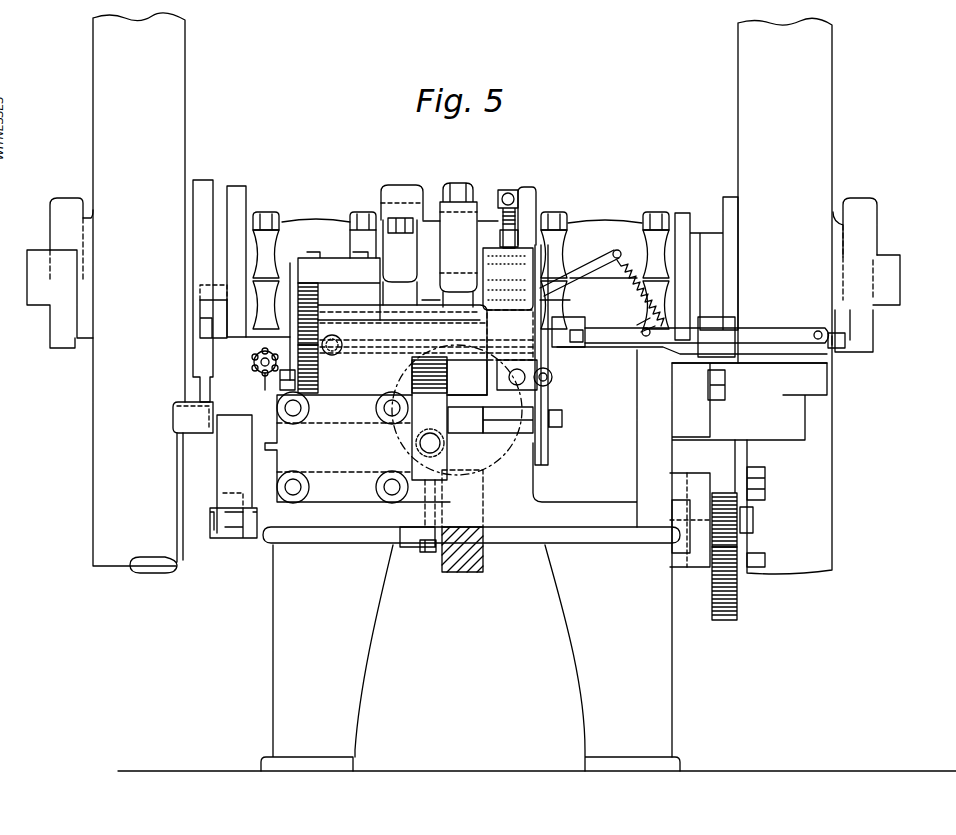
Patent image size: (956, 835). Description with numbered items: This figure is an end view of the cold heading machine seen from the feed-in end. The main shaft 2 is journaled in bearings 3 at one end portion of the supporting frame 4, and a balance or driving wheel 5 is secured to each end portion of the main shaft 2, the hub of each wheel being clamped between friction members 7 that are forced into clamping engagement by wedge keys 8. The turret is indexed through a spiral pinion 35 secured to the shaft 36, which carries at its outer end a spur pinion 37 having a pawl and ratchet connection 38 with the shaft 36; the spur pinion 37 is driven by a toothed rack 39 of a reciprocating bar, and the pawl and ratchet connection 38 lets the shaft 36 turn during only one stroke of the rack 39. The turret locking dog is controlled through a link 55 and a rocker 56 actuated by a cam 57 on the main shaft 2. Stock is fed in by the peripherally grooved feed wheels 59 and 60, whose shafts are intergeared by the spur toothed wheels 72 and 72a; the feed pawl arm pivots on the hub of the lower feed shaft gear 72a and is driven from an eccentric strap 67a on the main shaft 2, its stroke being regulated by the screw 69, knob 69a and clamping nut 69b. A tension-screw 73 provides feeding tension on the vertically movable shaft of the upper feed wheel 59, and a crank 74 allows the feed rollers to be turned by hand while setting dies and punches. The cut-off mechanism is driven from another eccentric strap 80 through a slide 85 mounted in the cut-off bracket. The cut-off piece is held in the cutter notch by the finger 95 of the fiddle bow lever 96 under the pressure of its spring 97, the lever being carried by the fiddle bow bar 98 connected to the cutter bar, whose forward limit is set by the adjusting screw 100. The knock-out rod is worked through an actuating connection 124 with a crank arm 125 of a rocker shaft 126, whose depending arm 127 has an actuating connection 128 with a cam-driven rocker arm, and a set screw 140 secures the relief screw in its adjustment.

The main shaft 2 is at (34, 275).
The bearings 3 is at (612, 222).
The supporting frame 4 is at (537, 658).
The balance or driving wheel 5 is at (840, 452).
The friction members 7 is at (848, 243).
The wedge keys 8 is at (58, 212).
The spiral pinion 35 is at (465, 565).
The shaft 36 is at (527, 537).
The spur pinion 37 is at (750, 512).
The pawl and ratchet connection 38 is at (686, 560).
The toothed rack 39 is at (728, 583).
The link 55 is at (200, 385).
The rocker 56 is at (213, 330).
The cam 57 is at (200, 270).
The upper feed wheel 59 is at (563, 303).
The lower feed wheel 60 is at (548, 452).
The eccentric strap 67a is at (400, 197).
The screw 69 is at (268, 370).
The knob 69a is at (254, 362).
The clamping nut 69b is at (257, 377).
The spur toothed wheel 72 is at (320, 340).
The lower feed shaft gear 72a is at (321, 383).
The tension-screw 73 is at (537, 196).
The crank 74 is at (177, 491).
The eccentric strap 80 is at (512, 192).
The slide 85 is at (700, 412).
The finger 95 is at (517, 319).
The fiddle bow lever 96 is at (580, 277).
The spring 97 is at (631, 298).
The fiddle bow bar 98 is at (752, 338).
The adjusting screw 100 is at (845, 350).
The actuating connection 124 is at (425, 372).
The crank arm 125 is at (448, 394).
The rocker shaft 126 is at (374, 447).
The depending arm 127 is at (222, 495).
The actuating connection 128 is at (237, 528).
The set screw 140 is at (430, 545).